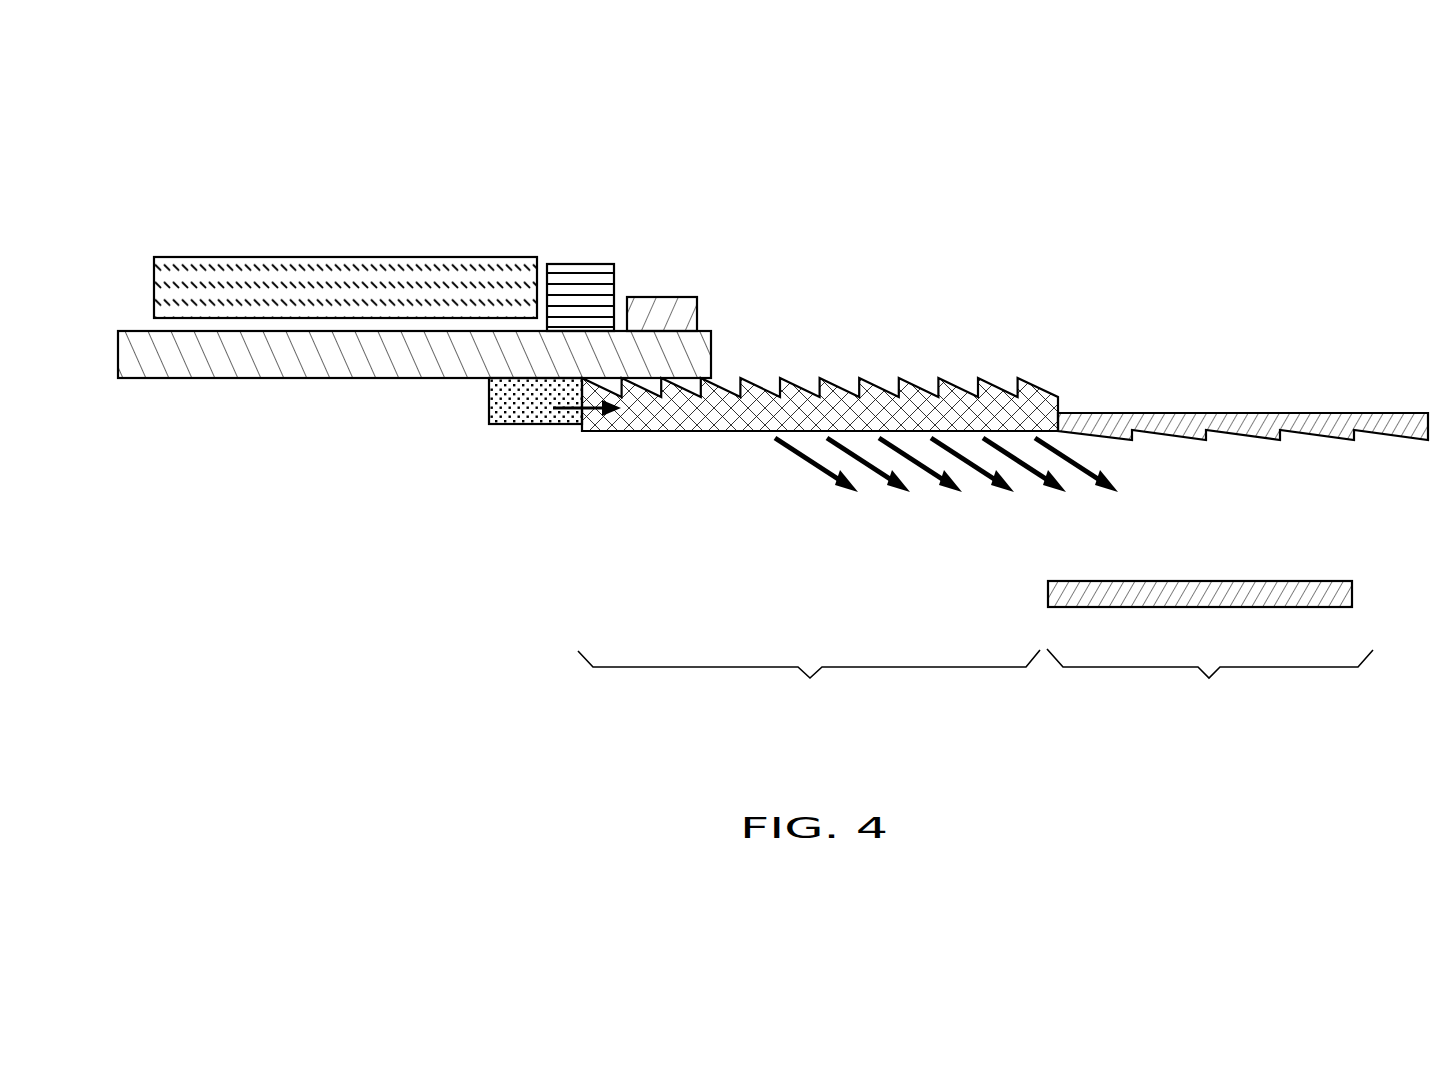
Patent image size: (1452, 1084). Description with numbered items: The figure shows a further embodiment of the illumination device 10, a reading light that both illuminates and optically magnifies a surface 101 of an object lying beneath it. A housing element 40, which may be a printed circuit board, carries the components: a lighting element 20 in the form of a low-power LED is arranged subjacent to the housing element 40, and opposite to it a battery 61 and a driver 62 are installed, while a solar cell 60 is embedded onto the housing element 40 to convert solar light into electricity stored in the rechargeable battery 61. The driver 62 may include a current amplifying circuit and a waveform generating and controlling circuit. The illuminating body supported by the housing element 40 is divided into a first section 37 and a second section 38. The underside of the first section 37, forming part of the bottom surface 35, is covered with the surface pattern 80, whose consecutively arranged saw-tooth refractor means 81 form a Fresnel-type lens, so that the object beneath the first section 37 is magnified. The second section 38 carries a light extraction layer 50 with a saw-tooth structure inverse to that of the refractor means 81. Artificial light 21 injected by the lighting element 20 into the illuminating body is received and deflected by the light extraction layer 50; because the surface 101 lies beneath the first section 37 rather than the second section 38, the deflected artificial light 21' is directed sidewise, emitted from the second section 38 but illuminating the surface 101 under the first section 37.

The illumination device 10 is at (1095, 218).
The lighting element 20 is at (525, 419).
The artificial light 21 is at (587, 455).
The deflected artificial light 21' is at (941, 490).
The bottom surface 35 is at (820, 408).
The first section 37 is at (1210, 684).
The second section 38 is at (809, 684).
The housing element 40 is at (203, 372).
The light extraction layer 50 is at (837, 407).
The solar cell 60 is at (348, 278).
The battery 61 is at (574, 276).
The driver 62 is at (657, 303).
The surface pattern 80 is at (1402, 462).
The refractor means 81 is at (1250, 423).
The surface 101 is at (1063, 595).